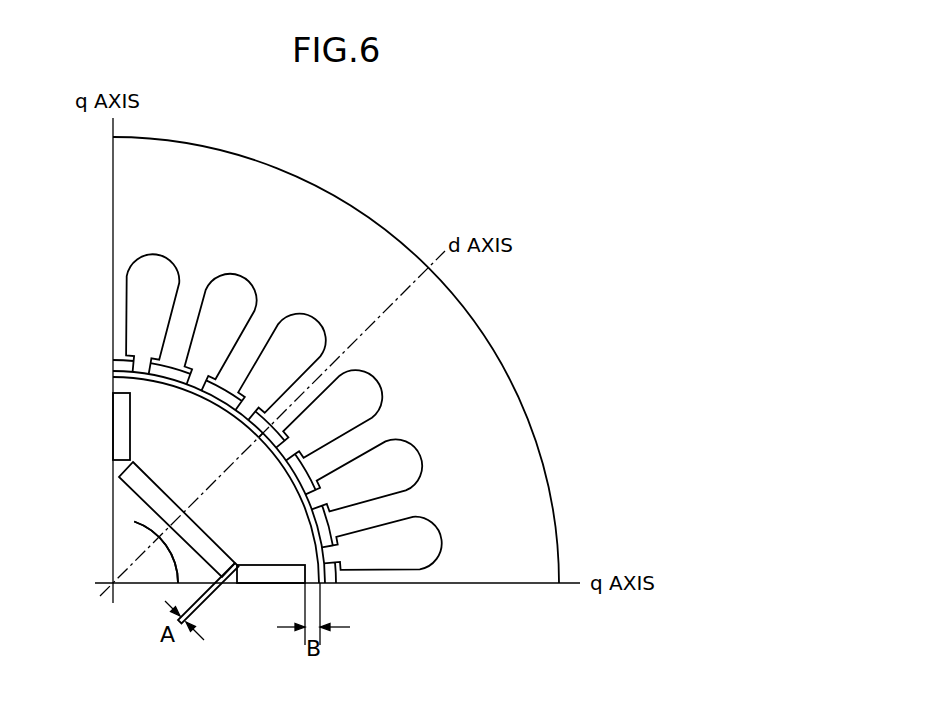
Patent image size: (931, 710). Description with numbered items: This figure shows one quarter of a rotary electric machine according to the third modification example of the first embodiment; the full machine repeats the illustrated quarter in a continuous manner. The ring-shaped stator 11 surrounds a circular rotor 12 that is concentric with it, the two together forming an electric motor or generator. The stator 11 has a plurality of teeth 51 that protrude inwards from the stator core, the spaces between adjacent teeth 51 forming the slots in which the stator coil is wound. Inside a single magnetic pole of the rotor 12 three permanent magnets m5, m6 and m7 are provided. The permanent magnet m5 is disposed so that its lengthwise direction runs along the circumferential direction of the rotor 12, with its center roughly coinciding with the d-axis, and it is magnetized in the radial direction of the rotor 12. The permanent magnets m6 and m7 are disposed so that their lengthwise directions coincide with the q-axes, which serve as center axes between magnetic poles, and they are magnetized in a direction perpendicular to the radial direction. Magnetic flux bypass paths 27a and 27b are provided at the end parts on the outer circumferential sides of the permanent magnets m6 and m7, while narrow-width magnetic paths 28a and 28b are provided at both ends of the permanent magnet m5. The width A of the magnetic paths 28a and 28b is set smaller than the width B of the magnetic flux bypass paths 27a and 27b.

The stator 11 is at (329, 378).
The rotor 12 is at (172, 538).
The teeth 51 is at (183, 322).
The magnetic flux bypass path 27a is at (125, 382).
The magnetic flux bypass path 27b is at (318, 580).
The narrow-width magnetic path 28a is at (127, 462).
The narrow-width magnetic path 28b is at (237, 568).
The permanent magnet m5 is at (135, 521).
The permanent magnet m6 is at (125, 420).
The permanent magnet m7 is at (263, 573).